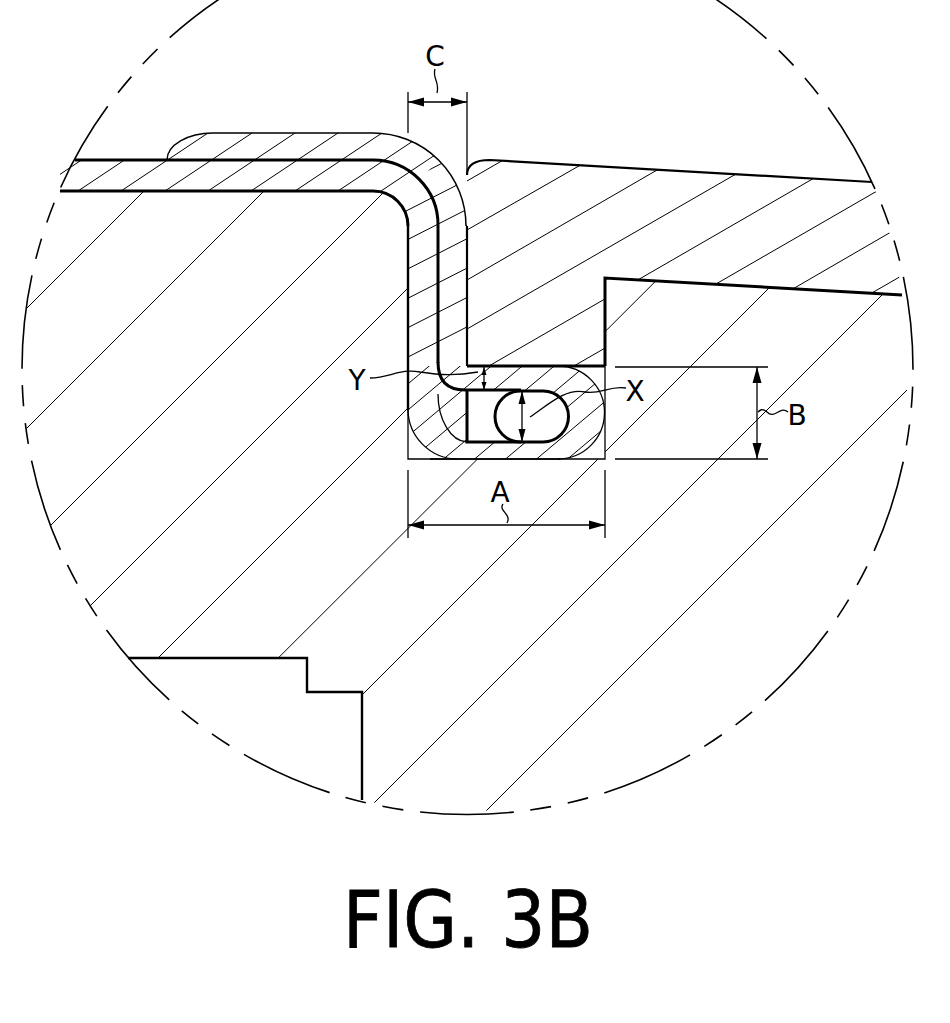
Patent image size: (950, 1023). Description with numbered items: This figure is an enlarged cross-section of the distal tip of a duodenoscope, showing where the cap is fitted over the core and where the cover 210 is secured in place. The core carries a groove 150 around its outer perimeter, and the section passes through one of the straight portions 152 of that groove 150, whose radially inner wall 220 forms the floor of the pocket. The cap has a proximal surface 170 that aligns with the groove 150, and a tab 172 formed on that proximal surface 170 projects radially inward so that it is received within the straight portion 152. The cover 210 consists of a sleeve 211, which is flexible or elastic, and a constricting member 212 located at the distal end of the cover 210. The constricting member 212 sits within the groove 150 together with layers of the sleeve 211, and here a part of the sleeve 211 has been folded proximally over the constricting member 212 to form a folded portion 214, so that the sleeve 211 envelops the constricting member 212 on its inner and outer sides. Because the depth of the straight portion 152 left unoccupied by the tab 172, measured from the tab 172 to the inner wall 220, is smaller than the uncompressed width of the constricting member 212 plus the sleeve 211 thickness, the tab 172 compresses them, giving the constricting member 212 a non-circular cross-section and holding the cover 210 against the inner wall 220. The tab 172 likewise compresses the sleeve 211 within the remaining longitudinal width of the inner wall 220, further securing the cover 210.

The groove 150 is at (606, 303).
The straight portion 152 is at (425, 455).
The proximal surface 170 is at (467, 244).
The tab 172 is at (567, 347).
The cover 210 is at (514, 376).
The sleeve 211 is at (130, 173).
The constricting member 212 is at (552, 425).
The folded portion 214 is at (357, 246).
The inner wall 220 is at (432, 460).